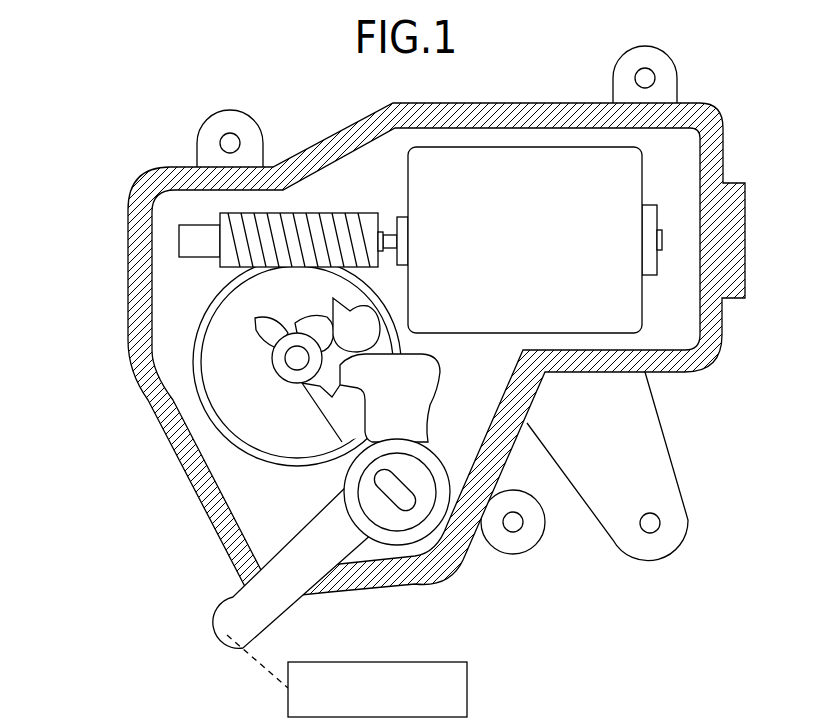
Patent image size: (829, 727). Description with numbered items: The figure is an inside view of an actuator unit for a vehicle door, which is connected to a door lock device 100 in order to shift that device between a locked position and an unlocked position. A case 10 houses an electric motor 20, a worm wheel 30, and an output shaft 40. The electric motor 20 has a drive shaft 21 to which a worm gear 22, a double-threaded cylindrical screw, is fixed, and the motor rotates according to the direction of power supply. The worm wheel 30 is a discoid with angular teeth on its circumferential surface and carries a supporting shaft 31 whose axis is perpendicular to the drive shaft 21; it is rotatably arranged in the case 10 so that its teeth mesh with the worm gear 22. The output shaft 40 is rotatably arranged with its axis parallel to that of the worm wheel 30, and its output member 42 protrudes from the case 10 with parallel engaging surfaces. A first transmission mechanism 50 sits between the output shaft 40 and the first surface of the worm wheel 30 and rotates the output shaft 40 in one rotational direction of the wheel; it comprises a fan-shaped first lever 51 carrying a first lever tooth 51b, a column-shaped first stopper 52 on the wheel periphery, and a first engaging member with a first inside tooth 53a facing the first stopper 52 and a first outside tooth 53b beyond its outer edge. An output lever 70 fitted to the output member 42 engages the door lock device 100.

The case 10 is at (707, 112).
The electric motor 20 is at (503, 167).
The drive shaft 21 is at (383, 233).
The worm gear 22 is at (277, 223).
The worm wheel 30 is at (186, 337).
The supporting shaft 31 is at (287, 373).
The output shaft 40 is at (431, 534).
The output member 42 is at (398, 500).
The first transmission mechanism 50 is at (304, 410).
The first lever 51 is at (413, 398).
The first lever tooth 51b is at (323, 395).
The first stopper 52 is at (358, 332).
The first inside tooth 53a is at (273, 335).
The first outside tooth 53b is at (320, 328).
The output lever 70 is at (280, 602).
The door lock device 100 is at (467, 690).